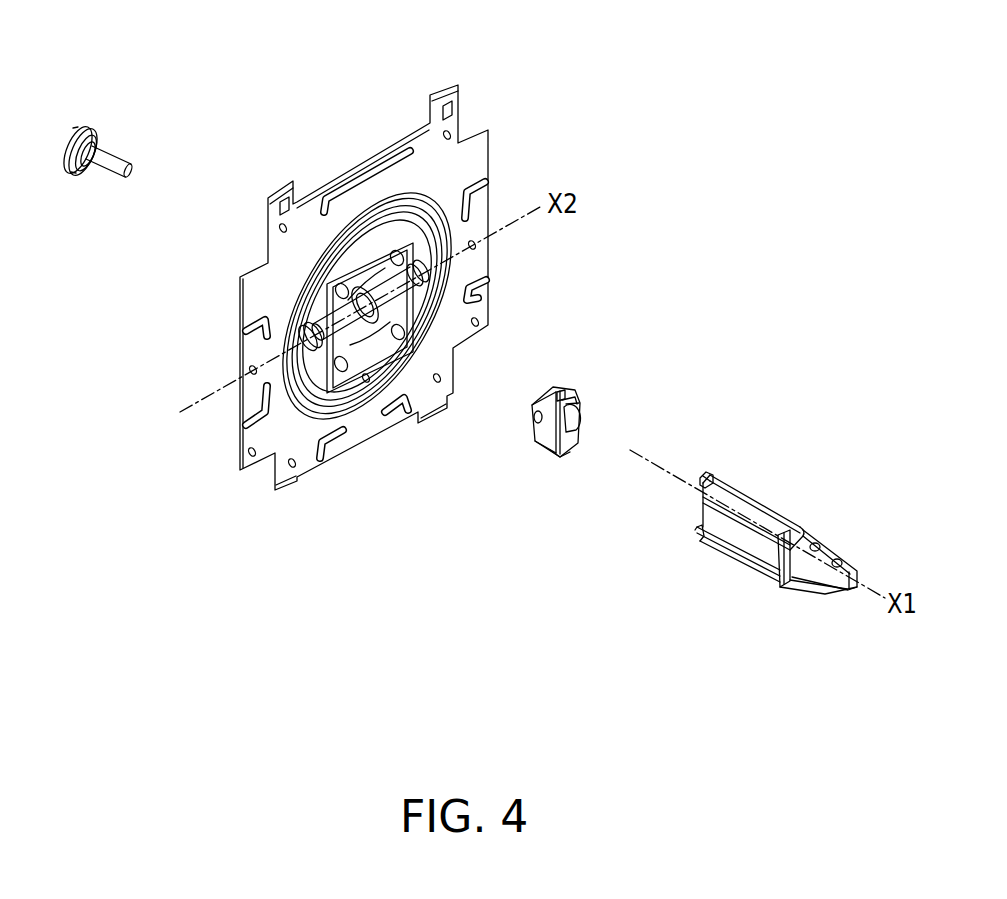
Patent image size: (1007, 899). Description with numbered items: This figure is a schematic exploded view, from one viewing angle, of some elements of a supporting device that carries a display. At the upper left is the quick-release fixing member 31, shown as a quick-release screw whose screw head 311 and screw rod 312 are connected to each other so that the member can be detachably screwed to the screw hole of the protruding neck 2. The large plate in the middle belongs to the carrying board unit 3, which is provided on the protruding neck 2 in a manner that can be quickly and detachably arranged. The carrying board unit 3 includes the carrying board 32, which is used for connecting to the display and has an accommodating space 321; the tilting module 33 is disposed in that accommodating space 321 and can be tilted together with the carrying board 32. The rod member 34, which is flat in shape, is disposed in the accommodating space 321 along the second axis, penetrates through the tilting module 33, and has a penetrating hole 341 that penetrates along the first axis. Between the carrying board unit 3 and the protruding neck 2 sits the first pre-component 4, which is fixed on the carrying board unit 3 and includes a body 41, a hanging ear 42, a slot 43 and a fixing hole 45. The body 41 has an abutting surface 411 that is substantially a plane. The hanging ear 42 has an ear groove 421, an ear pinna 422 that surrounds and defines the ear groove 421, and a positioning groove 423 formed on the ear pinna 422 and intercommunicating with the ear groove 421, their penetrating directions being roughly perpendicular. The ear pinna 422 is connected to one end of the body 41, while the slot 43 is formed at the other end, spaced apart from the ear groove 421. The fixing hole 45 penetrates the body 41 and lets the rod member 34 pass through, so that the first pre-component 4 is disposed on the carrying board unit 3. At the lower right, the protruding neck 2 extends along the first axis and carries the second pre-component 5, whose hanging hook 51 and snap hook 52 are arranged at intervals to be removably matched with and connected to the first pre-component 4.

The protruding neck 2 is at (737, 533).
The carrying board unit 3 is at (413, 288).
The quick-release fixing member 31 is at (118, 92).
The screw head 311 is at (88, 128).
The screw rod 312 is at (121, 160).
The carrying board 32 is at (413, 286).
The accommodating space 321 is at (443, 216).
The tilting module 33 is at (342, 375).
The rod member 34 is at (363, 232).
The penetrating hole 341 is at (372, 268).
The first pre-component 4 is at (592, 406).
The body 41 is at (548, 432).
The abutting surface 411 is at (578, 433).
The hanging ear 42 is at (642, 351).
The ear groove 421 is at (568, 407).
The ear pinna 422 is at (619, 386).
The positioning groove 423 is at (563, 392).
The slot 43 is at (571, 461).
The fixing hole 45 is at (536, 417).
The second pre-component 5 is at (698, 568).
The hanging hook 51 is at (702, 476).
The snap hook 52 is at (696, 532).